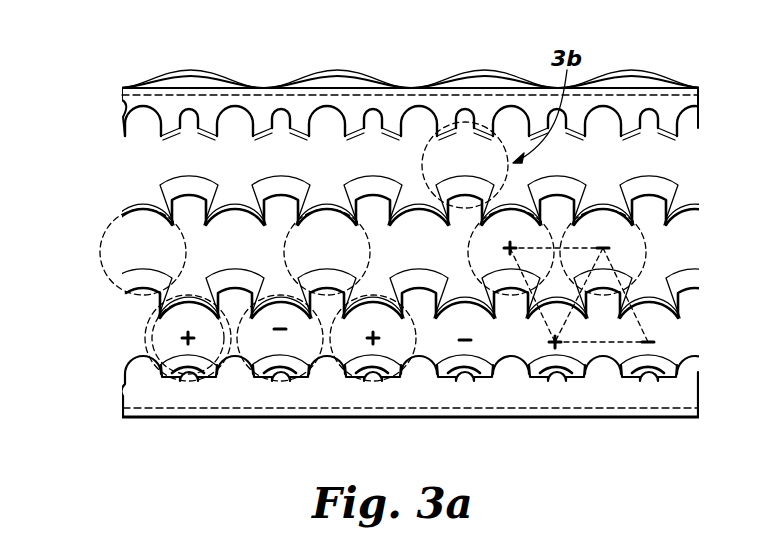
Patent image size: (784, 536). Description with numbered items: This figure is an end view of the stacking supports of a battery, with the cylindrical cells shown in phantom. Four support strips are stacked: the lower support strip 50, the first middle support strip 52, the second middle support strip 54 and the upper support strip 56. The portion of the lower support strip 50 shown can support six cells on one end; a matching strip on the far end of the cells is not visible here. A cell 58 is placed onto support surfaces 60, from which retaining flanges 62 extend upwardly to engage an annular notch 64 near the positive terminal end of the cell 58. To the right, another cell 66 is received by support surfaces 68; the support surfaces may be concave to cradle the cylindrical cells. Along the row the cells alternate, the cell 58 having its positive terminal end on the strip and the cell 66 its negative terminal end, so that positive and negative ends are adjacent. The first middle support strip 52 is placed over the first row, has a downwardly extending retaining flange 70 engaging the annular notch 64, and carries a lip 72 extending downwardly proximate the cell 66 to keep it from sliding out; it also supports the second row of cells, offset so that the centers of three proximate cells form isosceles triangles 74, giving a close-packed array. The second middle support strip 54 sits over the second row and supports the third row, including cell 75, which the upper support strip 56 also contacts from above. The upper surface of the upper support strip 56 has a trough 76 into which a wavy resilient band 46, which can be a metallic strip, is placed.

The resilient band 46 is at (484, 70).
The lower support strip 50 is at (122, 398).
The first middle support strip 52 is at (140, 288).
The second middle support strip 54 is at (124, 212).
The upper support strip 56 is at (124, 103).
The cell 58 is at (145, 338).
The support surfaces 60 is at (211, 385).
The retaining flanges 62 is at (205, 377).
The annular notch 64 is at (146, 328).
The cell 66 is at (291, 360).
The support surfaces 68 is at (300, 383).
The ribbon leg 70 is at (194, 294).
The lip 72 is at (278, 294).
The isosceles triangles 74 is at (650, 333).
The cell 75 is at (476, 170).
The trough 76 is at (493, 410).